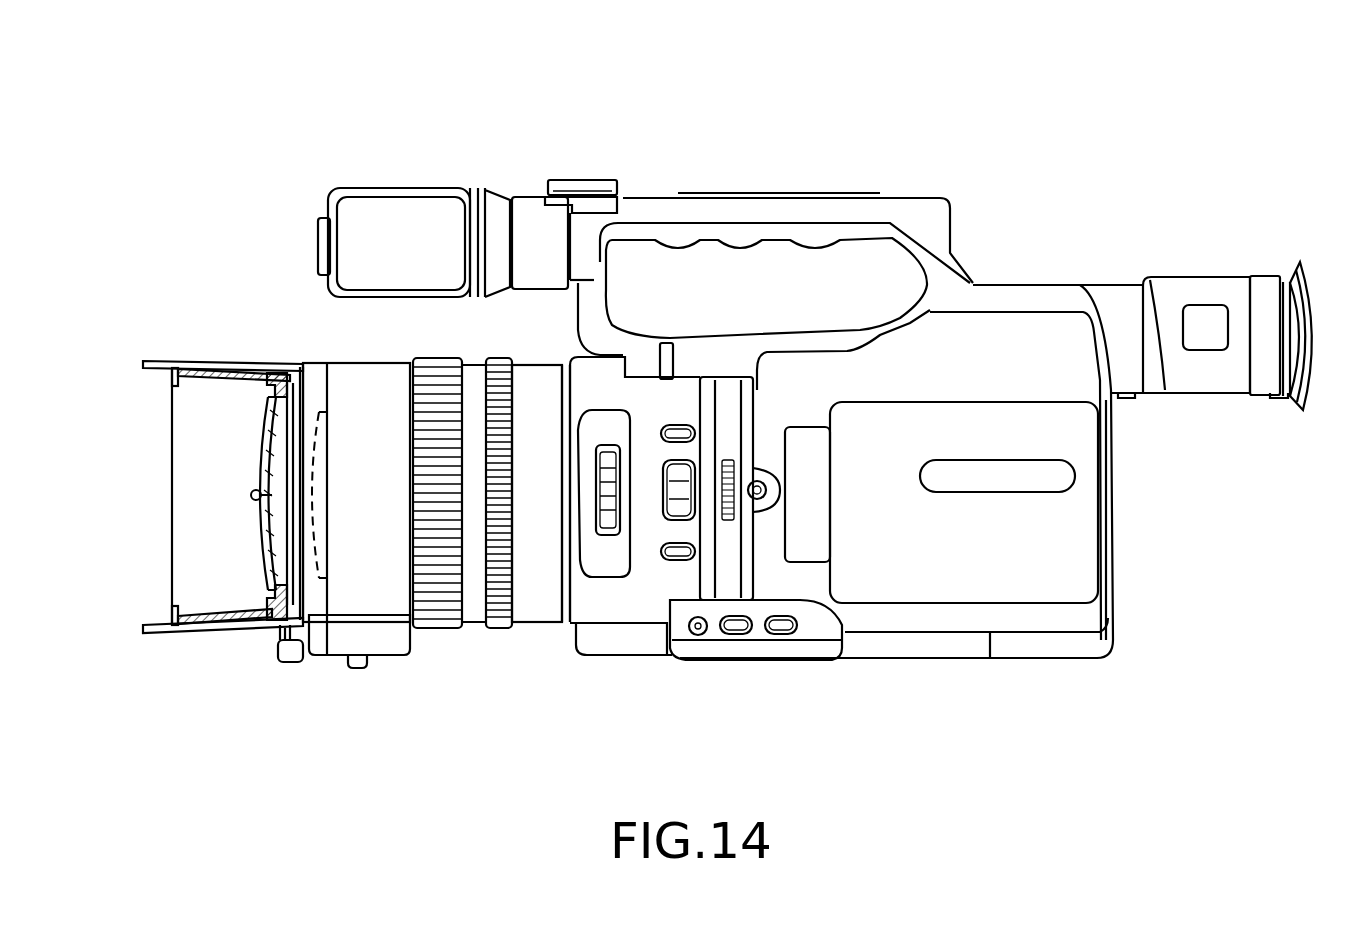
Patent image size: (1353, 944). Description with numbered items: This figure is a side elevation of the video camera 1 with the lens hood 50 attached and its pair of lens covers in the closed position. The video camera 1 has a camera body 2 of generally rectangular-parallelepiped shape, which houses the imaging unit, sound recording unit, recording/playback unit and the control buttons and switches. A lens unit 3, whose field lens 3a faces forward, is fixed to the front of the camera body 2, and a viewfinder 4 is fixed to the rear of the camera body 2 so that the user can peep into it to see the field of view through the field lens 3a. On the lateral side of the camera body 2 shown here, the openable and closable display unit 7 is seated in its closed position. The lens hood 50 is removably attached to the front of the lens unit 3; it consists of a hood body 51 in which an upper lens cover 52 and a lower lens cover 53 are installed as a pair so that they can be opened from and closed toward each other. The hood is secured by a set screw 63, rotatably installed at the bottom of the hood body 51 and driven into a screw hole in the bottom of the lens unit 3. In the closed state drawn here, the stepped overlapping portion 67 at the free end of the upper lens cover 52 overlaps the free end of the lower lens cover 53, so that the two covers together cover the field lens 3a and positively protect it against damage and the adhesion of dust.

The video camera 1 is at (309, 87).
The camera body 2 is at (1022, 660).
The lens unit 3 is at (476, 618).
The field lens 3a is at (324, 505).
The viewfinder 4 is at (1240, 278).
The display unit 7 is at (1075, 540).
The lens hood 50 is at (165, 284).
The hood body 51 is at (200, 634).
The upper lens cover 52 is at (258, 450).
The lower lens cover 53 is at (256, 531).
The set screw 63 is at (357, 669).
The stepped overlapping portion 67 is at (248, 494).